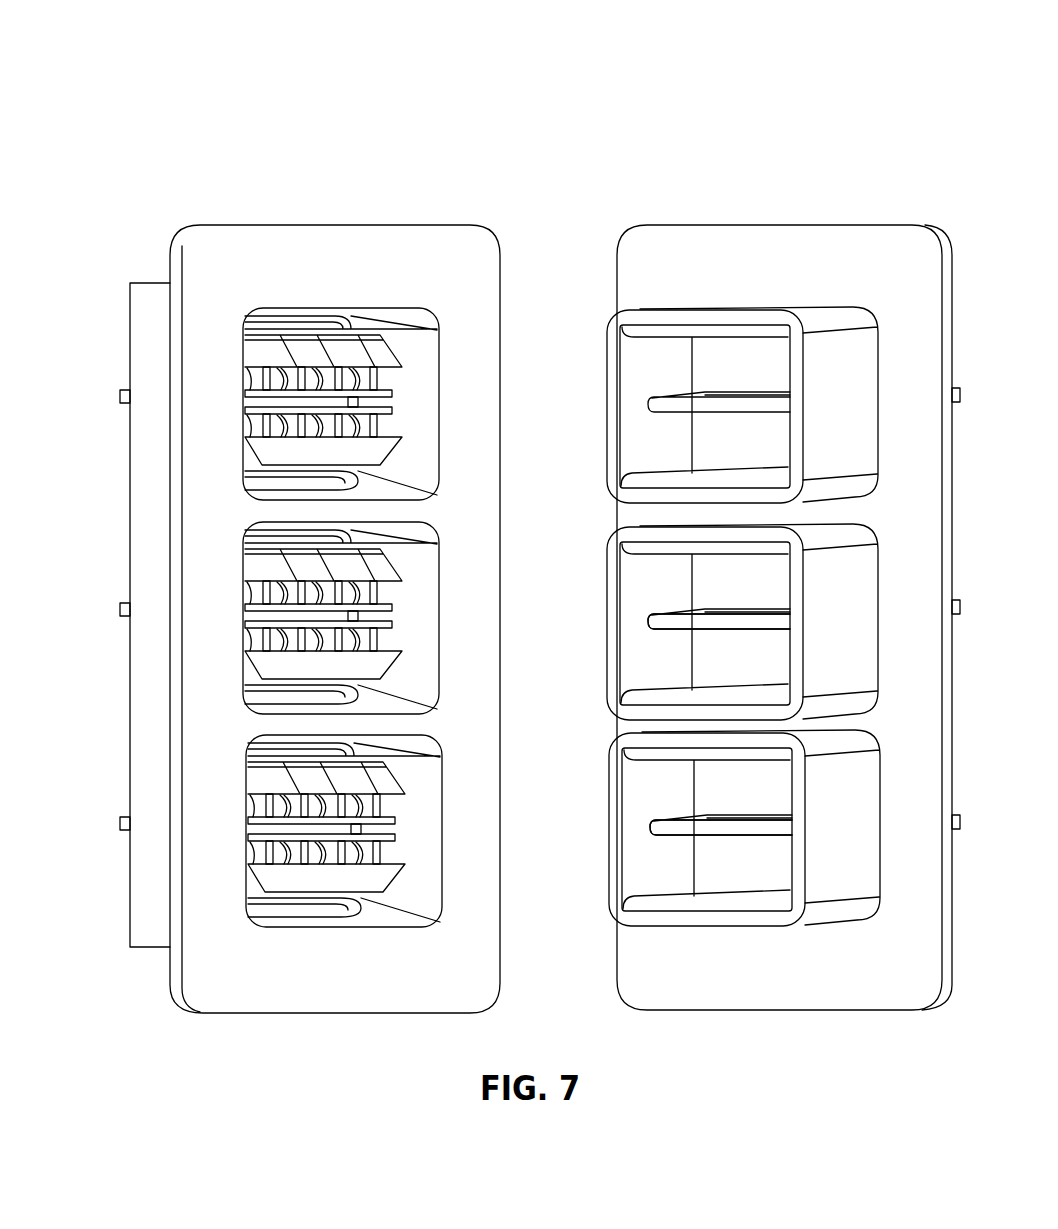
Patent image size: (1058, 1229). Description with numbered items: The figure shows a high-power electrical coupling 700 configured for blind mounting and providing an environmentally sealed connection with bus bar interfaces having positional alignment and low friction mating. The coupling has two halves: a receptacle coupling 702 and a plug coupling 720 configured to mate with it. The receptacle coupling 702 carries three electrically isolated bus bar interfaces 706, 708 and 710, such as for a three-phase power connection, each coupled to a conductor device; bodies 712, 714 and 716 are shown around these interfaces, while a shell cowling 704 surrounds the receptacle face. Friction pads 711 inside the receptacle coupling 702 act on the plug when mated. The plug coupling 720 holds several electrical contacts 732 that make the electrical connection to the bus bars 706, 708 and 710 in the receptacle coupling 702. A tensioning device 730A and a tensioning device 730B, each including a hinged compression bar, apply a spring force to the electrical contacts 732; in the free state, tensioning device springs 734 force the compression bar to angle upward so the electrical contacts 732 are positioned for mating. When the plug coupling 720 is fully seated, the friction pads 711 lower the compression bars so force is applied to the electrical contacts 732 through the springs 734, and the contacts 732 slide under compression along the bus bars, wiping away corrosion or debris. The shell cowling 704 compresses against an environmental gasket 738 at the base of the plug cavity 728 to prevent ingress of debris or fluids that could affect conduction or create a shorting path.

The high-power electrical coupling 700 is at (880, 86).
The receptacle coupling 702 is at (796, 212).
The shell cowling 704 is at (770, 305).
The bus bar interface 706 is at (760, 385).
The bus bar interface 708 is at (760, 602).
The bus bar interface 710 is at (754, 816).
The friction pads 711 is at (663, 480).
The first receptacle body 712 is at (853, 440).
The second receptacle body 714 is at (852, 614).
The third receptacle body 716 is at (852, 830).
The plug coupling 720 is at (334, 203).
The plug cavity 728 is at (447, 590).
The tensioning device 730A is at (268, 348).
The tensioning device 730B is at (262, 455).
The electrical contacts 732 is at (393, 411).
The tensioning device springs 734 is at (352, 422).
The environmental gasket 738 is at (260, 489).